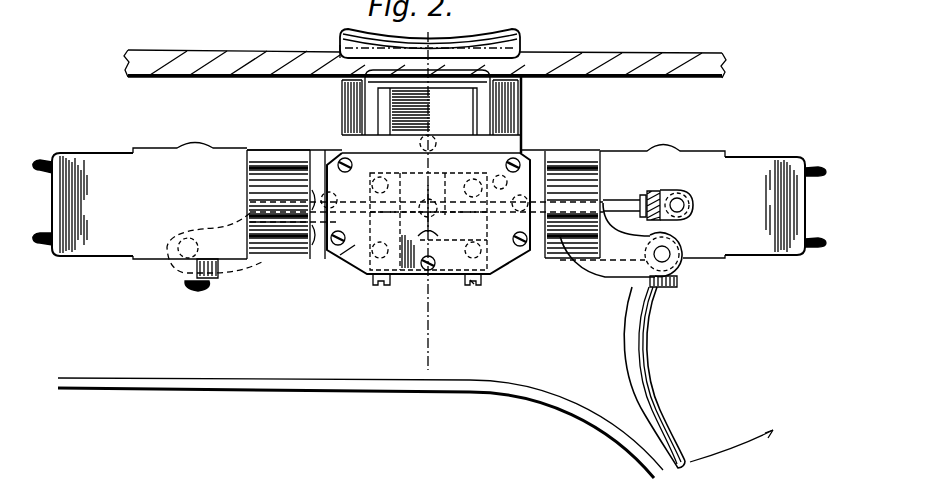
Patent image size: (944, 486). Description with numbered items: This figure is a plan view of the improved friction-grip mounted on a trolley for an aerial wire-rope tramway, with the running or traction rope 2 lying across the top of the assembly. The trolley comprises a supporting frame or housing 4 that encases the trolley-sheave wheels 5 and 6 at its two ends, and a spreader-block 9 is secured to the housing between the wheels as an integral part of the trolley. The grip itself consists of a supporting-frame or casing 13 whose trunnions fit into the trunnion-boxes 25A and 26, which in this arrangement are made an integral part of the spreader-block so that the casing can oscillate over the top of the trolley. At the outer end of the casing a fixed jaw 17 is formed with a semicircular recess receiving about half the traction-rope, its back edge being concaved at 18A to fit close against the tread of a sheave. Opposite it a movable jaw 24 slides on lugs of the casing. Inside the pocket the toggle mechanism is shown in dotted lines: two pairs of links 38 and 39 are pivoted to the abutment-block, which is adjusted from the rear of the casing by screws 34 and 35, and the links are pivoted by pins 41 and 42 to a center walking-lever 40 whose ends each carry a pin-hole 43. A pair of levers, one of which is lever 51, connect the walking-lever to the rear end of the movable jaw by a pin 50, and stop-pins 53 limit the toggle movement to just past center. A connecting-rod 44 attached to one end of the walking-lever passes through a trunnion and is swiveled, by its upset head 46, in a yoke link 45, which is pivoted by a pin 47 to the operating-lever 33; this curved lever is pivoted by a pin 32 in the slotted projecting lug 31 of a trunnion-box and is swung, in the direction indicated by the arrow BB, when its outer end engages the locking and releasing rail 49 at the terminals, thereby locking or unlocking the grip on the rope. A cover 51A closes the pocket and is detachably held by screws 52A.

The traction rope 2 is at (600, 64).
The supporting frame or housing 4 is at (429, 200).
The trolley-sheave wheel 5 is at (50, 158).
The trolley-sheave wheel 6 is at (808, 160).
The spreader-block 9 is at (270, 152).
The supporting-frame or casing 13 is at (492, 275).
The fixed jaw 17 is at (430, 46).
The concaved back edge 18A is at (370, 30).
The movable jaw 24 is at (458, 106).
The trunnion-box 25A is at (286, 204).
The trunnion-box 26 is at (598, 180).
The projecting lug 31 is at (615, 262).
The pin 32 is at (668, 257).
The operating-lever 33 is at (640, 360).
The screw 34 is at (380, 282).
The screw 35 is at (472, 282).
The links 38 is at (340, 262).
The links 39 is at (497, 155).
The walking-lever 40 is at (405, 172).
The pivotal pin 41 is at (366, 180).
The pivotal pin 42 is at (486, 158).
The pin-hole 43 is at (330, 203).
The connecting-rod 44 is at (626, 206).
The link 45 is at (668, 190).
The head 46 is at (690, 210).
The pin 47 is at (684, 200).
The locking and releasing rail 49 is at (437, 392).
The pin 50 is at (432, 110).
The lever 51 is at (418, 158).
The cover 51A is at (418, 278).
The screws 52A is at (338, 160).
The stop-pins 53 is at (484, 188).
The direction arrow BB is at (731, 452).